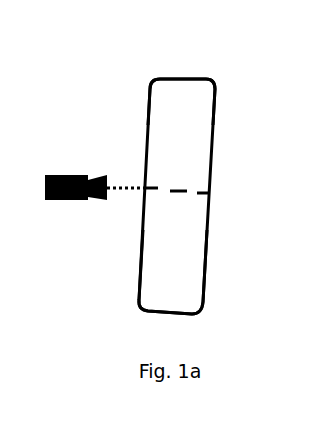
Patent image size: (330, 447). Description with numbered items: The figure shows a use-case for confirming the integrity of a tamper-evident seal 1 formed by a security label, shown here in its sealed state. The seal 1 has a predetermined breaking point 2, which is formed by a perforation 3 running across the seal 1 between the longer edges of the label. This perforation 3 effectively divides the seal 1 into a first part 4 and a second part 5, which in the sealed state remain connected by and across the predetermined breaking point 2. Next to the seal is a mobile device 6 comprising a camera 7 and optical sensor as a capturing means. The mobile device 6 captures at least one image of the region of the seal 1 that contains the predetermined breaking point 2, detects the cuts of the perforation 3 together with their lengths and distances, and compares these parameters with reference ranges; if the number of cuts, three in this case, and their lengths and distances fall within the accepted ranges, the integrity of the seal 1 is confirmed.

The tamper-evident seal 1 is at (217, 117).
The predetermined breaking point 2 is at (157, 185).
The perforation 3 is at (175, 191).
The first part 4 is at (182, 95).
The second part 5 is at (180, 268).
The mobile device 6 is at (62, 172).
The camera 7 is at (98, 201).